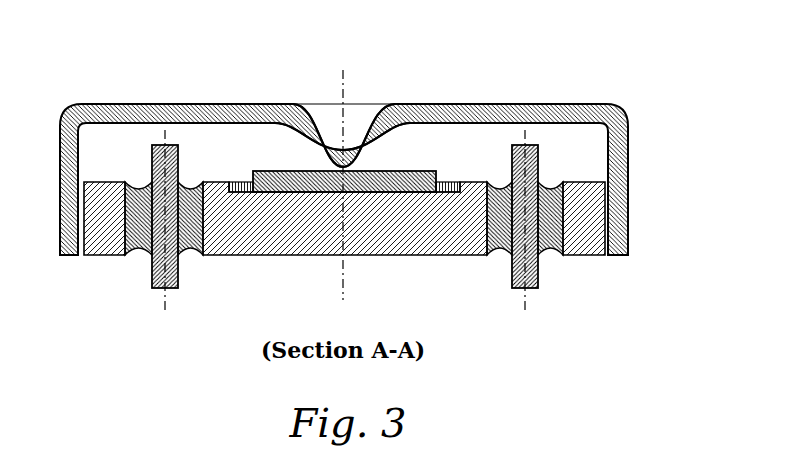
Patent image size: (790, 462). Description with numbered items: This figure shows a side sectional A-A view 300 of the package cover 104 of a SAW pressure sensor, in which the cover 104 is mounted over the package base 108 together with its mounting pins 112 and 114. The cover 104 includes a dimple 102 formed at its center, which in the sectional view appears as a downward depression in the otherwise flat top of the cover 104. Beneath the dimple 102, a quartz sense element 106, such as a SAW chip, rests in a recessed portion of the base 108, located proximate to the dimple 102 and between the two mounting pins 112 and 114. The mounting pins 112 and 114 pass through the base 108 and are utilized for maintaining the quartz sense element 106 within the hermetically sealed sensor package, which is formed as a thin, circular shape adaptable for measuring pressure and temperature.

The side sectional A-A view 300 is at (622, 72).
The dimple 102 is at (338, 143).
The package cover 104 is at (95, 104).
The quartz sense element 106 is at (273, 170).
The package base 108 is at (280, 255).
The mounting pin 112 is at (152, 270).
The mounting pin 114 is at (538, 272).